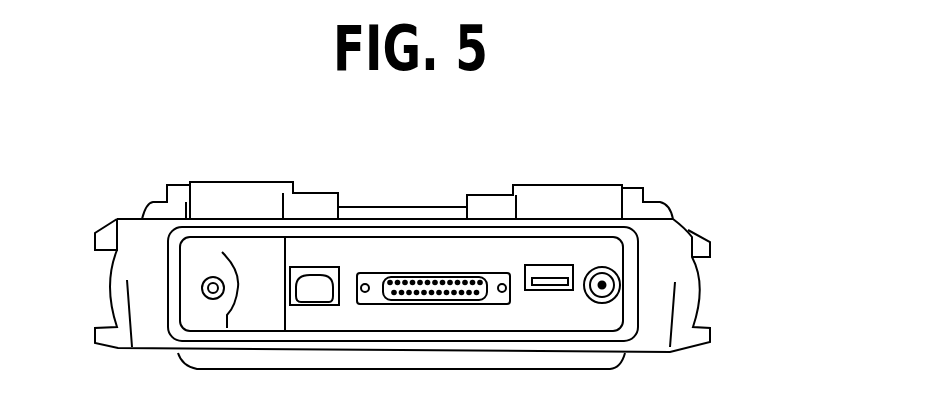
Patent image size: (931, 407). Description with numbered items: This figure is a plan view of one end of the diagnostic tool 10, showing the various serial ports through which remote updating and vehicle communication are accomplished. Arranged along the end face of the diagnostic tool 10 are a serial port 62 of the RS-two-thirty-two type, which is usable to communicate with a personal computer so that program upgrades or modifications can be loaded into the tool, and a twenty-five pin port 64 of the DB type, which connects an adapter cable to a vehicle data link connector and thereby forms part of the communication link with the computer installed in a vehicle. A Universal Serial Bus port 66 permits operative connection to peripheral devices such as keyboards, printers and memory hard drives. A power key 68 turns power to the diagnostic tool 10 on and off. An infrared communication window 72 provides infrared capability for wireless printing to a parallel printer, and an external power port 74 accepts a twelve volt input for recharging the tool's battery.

The diagnostic tool 10 is at (728, 257).
The RS-232 serial port 62 is at (317, 288).
The DB-25 pin port 64 is at (440, 280).
The Universal Serial Bus (USB) port 66 is at (543, 272).
The power key 68 is at (213, 268).
The infrared communication window 72 is at (258, 262).
The external power port 74 is at (602, 282).